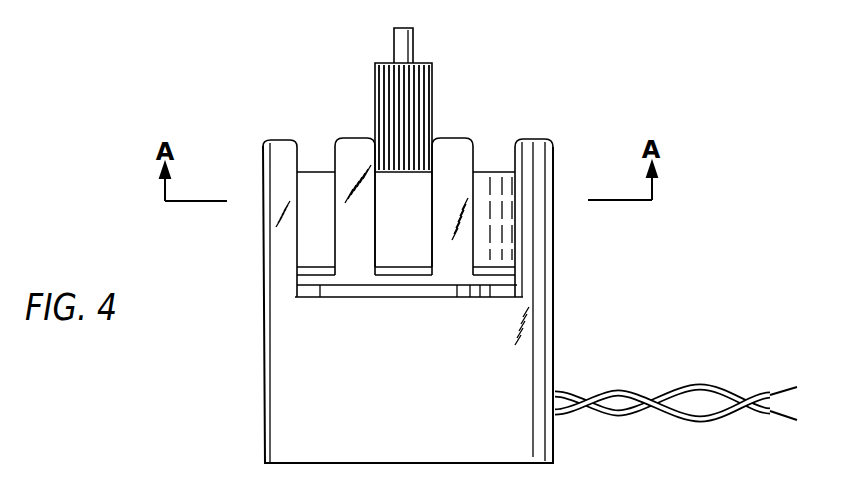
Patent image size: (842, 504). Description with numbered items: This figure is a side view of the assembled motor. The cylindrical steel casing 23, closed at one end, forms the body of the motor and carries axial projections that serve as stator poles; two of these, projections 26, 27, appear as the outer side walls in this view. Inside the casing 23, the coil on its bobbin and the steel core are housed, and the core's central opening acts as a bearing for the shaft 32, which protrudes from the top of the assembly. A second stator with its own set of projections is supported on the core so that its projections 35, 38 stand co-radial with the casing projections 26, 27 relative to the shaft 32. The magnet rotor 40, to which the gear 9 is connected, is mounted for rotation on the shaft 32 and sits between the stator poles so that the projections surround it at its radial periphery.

The gear 9 is at (424, 88).
The cylindrical steel casing 23 is at (307, 383).
The axial projection 26 is at (542, 152).
The axial projection 27 is at (278, 155).
The shaft 32 is at (401, 44).
The projection 35 is at (462, 157).
The projection 38 is at (352, 150).
The magnet rotor 40 is at (497, 228).